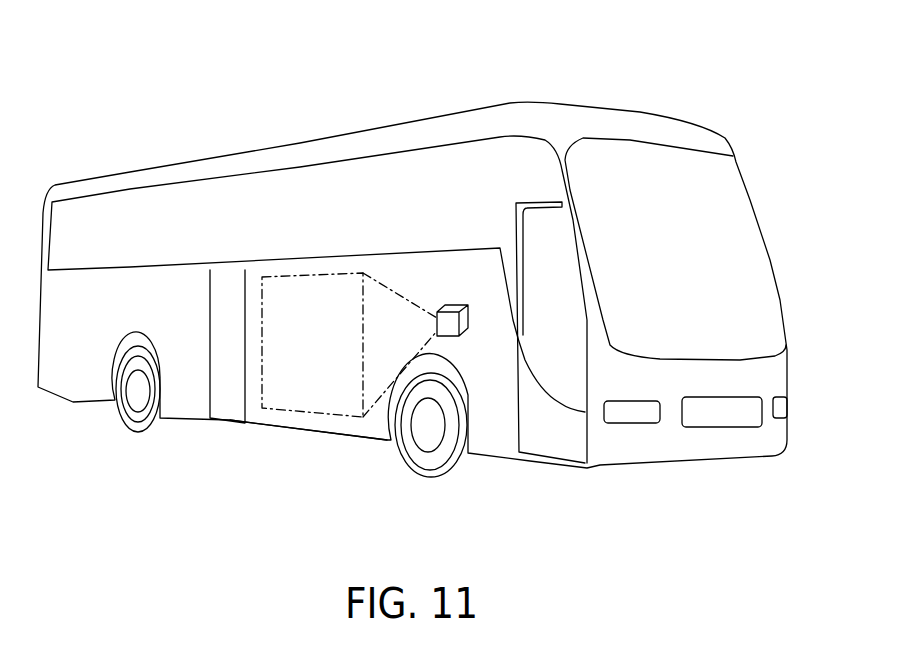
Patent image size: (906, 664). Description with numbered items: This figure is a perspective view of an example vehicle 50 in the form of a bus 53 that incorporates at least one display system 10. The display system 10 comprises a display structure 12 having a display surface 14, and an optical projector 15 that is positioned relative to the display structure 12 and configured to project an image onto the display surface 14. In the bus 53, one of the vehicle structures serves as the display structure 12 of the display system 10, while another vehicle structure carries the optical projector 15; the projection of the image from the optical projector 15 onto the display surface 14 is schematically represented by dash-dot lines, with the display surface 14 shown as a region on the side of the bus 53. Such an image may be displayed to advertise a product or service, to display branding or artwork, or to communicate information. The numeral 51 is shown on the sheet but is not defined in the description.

The display system 10 is at (327, 481).
The display structure 12 is at (301, 433).
The display surface 14 is at (326, 353).
The optical projector 15 is at (463, 330).
The vehicle 50 is at (131, 50).
The vehicle system 51 is at (213, 60).
The bus 53 is at (297, 68).